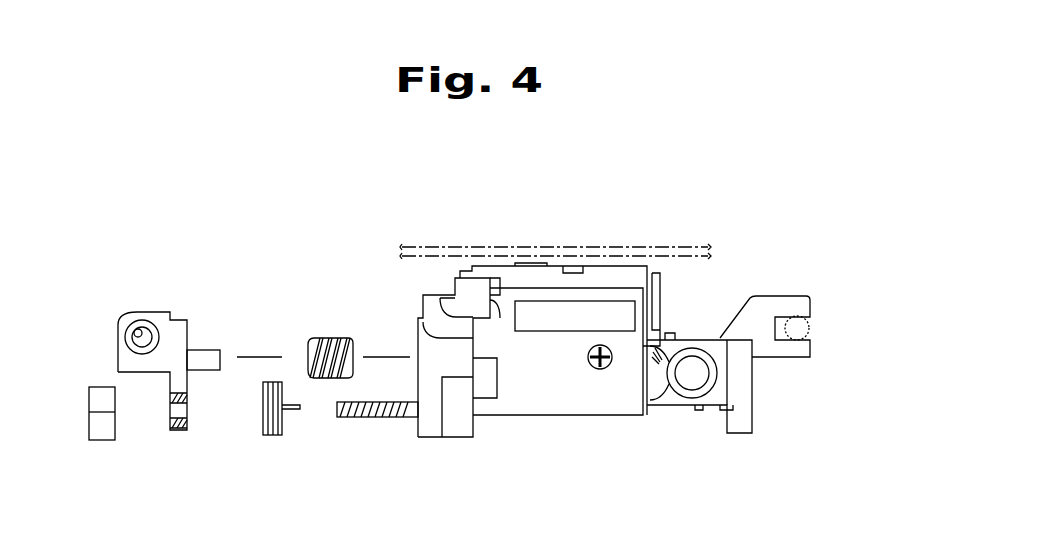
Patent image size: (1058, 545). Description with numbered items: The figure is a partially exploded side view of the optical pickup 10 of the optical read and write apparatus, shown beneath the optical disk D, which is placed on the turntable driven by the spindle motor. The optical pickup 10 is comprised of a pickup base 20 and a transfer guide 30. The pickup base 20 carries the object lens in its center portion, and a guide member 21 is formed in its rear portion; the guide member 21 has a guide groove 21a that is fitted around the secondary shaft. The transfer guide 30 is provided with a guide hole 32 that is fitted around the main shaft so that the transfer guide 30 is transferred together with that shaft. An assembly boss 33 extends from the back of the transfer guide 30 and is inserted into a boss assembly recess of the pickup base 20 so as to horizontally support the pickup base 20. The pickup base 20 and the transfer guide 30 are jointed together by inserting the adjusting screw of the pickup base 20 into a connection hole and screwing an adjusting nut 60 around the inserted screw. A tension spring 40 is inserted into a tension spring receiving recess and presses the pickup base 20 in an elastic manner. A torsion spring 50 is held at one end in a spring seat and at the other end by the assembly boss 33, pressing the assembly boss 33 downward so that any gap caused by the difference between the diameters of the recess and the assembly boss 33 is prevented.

The optical disk D is at (565, 248).
The optical pickup 10 is at (575, 423).
The pickup base 20 is at (633, 407).
The guide member 21 is at (773, 305).
The guide groove 21a is at (807, 333).
The transfer guide 30 is at (177, 432).
The guide hole 32 is at (137, 333).
The assembly boss 33 is at (208, 350).
The tension spring 40 is at (315, 337).
The torsion spring 50 is at (267, 433).
The adjusting nut 60 is at (97, 432).